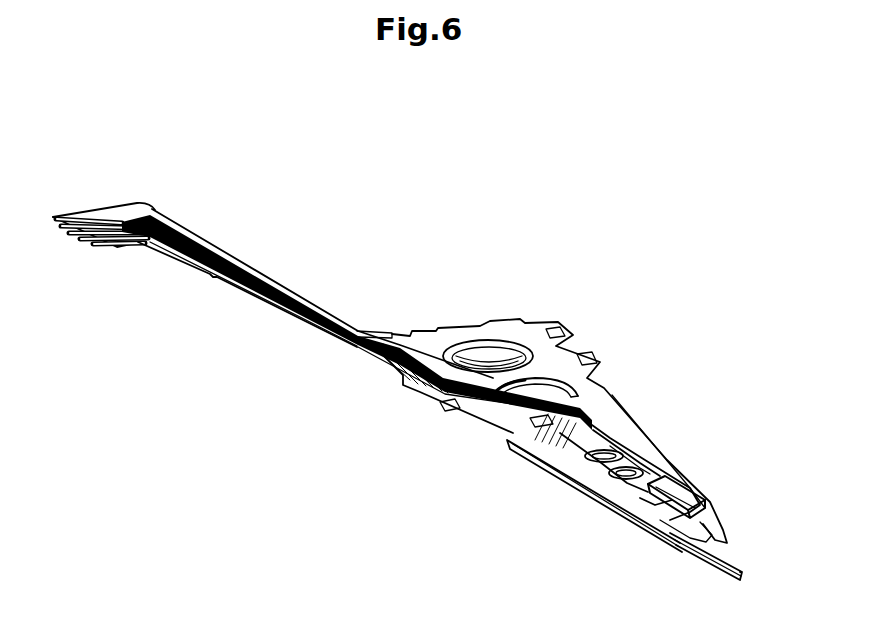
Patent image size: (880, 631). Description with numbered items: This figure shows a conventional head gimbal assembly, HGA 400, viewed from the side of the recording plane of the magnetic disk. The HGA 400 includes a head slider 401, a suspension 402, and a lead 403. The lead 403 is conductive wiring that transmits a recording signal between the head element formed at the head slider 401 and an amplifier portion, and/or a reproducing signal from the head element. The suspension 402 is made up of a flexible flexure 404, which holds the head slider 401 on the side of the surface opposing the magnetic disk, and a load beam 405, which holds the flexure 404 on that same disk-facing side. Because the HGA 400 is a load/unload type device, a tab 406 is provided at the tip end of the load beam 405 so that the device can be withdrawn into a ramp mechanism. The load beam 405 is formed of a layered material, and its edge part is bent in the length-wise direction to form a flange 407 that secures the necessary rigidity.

The HGA 400 is at (418, 256).
The head slider 401 is at (647, 518).
The suspension 402 is at (684, 373).
The lead 403 is at (299, 292).
The flexure 404 is at (676, 470).
The load beam 405 is at (641, 428).
The tab 406 is at (738, 574).
The flange 407 is at (557, 478).